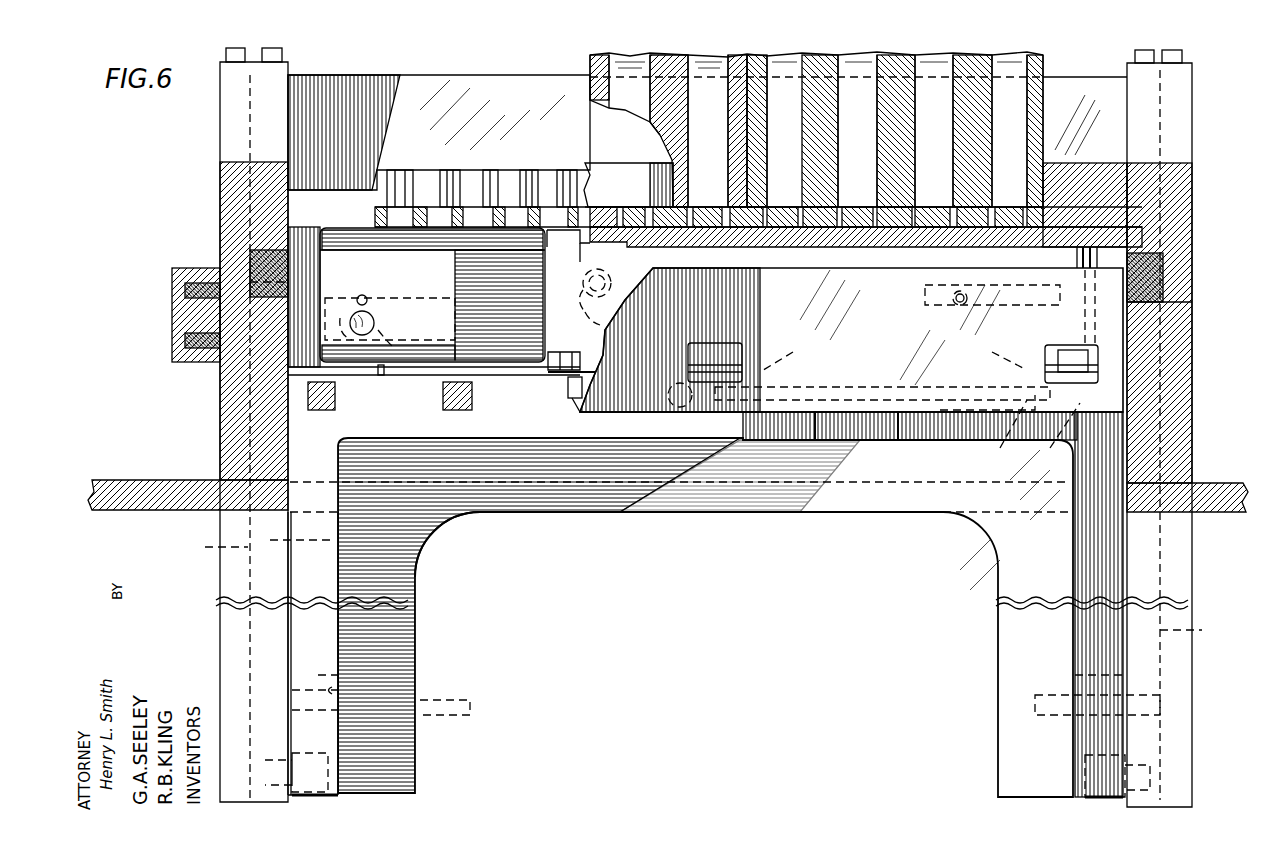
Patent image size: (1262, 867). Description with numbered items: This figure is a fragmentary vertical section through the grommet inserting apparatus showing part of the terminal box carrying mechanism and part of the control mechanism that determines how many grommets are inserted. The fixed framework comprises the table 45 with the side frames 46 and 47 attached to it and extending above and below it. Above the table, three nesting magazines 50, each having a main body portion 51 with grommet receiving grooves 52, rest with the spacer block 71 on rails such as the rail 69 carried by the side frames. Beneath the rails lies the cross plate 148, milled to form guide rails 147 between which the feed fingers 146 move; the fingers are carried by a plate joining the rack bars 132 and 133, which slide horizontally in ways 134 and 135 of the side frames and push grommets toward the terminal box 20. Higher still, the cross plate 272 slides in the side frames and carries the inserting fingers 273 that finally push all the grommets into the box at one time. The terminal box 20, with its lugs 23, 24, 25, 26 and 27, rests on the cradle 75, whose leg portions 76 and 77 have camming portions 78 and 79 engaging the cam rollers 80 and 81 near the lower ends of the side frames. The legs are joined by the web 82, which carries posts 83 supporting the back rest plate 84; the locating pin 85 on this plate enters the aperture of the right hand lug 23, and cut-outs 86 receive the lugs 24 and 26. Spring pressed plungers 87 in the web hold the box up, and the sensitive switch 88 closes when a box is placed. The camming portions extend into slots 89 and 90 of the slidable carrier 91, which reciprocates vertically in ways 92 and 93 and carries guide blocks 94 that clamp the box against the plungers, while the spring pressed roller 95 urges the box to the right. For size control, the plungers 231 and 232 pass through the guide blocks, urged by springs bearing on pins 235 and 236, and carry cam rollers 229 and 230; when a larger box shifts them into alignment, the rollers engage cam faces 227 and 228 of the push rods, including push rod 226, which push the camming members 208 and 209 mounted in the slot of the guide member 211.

The terminal box 20 is at (591, 359).
The lug 23 is at (1037, 250).
The lug 24 is at (1072, 353).
The lug 25 is at (555, 243).
The lug 26 is at (558, 353).
The lug 27 is at (575, 400).
The table 45 is at (183, 495).
The side frame 46 is at (232, 429).
The side frame 47 is at (1180, 385).
The magazine 50 is at (676, 46).
The main body portion 51 is at (832, 53).
The grommet receiving groove 52 is at (868, 58).
The rail 69 is at (605, 183).
The spacer block 71 is at (1098, 152).
The cradle 75 is at (754, 450).
The leg portion 76 is at (330, 647).
The leg portion 77 is at (1087, 633).
The camming portion 78 is at (318, 675).
The camming portion 79 is at (1087, 675).
The cam roller 80 is at (315, 800).
The cam roller 81 is at (1100, 802).
The web 82 is at (770, 440).
The post 83 is at (443, 400).
The plate 84 is at (727, 408).
The locating pin 85 is at (1078, 258).
The cut-out 86 is at (738, 352).
The spring pressed plunger 87 is at (382, 375).
The sensitive switch 88 is at (843, 440).
The slot 89 is at (332, 687).
The slot 90 is at (1082, 740).
The slidable carrier 91 is at (437, 515).
The way 92 is at (248, 542).
The way 93 is at (1160, 625).
The guide block 94 is at (690, 265).
The spring pressed roller 95 is at (1090, 293).
The rack bar 132 is at (267, 253).
The rack bar 133 is at (1153, 263).
The way 134 is at (252, 258).
The way 135 is at (1163, 287).
The feed finger 146 is at (1007, 212).
The guide rail 147 is at (462, 223).
The cross plate 148 is at (812, 247).
The camming member 208 is at (185, 292).
The camming member 209 is at (185, 337).
The guide member 211 is at (177, 307).
The push rod 226 is at (450, 270).
The cam face 227 is at (586, 320).
The cam face 228 is at (353, 338).
The cam roller 229 is at (590, 305).
The cam roller 230 is at (402, 332).
The plunger 231 is at (606, 290).
The plunger 232 is at (374, 323).
The pin 235 is at (604, 272).
The pin 236 is at (367, 303).
The cross plate 272 is at (478, 86).
The inserting finger 273 is at (470, 182).